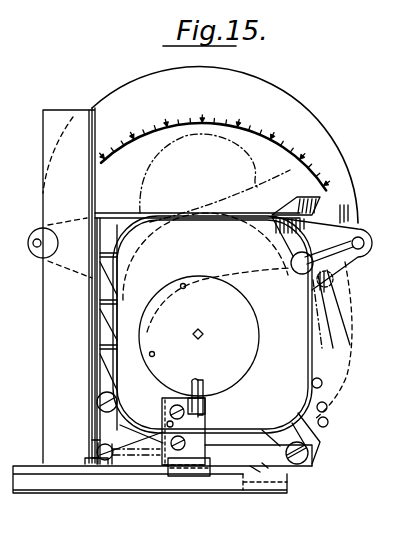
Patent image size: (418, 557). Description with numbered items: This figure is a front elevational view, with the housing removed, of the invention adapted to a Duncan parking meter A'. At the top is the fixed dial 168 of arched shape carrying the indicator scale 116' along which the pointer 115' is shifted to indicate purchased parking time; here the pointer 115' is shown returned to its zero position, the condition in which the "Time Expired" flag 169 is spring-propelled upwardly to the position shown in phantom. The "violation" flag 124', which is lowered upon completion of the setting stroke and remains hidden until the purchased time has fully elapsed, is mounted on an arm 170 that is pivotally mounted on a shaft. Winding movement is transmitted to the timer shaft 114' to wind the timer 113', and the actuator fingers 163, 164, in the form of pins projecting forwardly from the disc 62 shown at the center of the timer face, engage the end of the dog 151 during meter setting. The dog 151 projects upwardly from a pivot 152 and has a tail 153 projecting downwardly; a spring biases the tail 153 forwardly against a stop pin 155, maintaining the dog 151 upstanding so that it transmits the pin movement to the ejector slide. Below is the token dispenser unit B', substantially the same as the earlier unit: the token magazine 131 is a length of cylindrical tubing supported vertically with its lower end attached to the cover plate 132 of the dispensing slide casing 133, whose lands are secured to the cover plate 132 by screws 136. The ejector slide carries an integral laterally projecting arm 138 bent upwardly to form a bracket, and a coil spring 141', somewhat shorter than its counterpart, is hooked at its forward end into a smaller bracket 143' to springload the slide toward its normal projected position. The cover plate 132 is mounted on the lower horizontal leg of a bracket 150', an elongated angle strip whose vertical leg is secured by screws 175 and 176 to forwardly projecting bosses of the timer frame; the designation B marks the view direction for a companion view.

The token magazine 131 is at (78, 97).
The fixed dial 168 is at (293, 99).
The indicator scale 116' is at (229, 147).
The Duncan parking meter A' is at (372, 159).
The violation flag 124' is at (195, 178).
The pointer 115' is at (288, 206).
The time expired flag 169 is at (112, 341).
The timer 113' is at (212, 324).
The disc 62 is at (259, 337).
The actuator finger 164 is at (183, 284).
The timer shaft 114' is at (220, 335).
The actuator finger 163 is at (155, 354).
The dog 151 is at (199, 383).
The pivot 152 is at (203, 394).
The tail 153 is at (202, 408).
The stop pin 155 is at (193, 398).
The arm 170 is at (338, 312).
The screw 175 is at (320, 441).
The bracket 150' is at (279, 455).
The cover plate 132 is at (285, 474).
The dispensing slide casing 133 is at (270, 486).
The screw 136 is at (258, 465).
The arm 138 is at (190, 476).
The coil spring 141' is at (131, 472).
The bracket 143' is at (93, 481).
The screw 176 is at (108, 442).
The token dispenser unit B' is at (22, 419).
The section line B is at (409, 505).